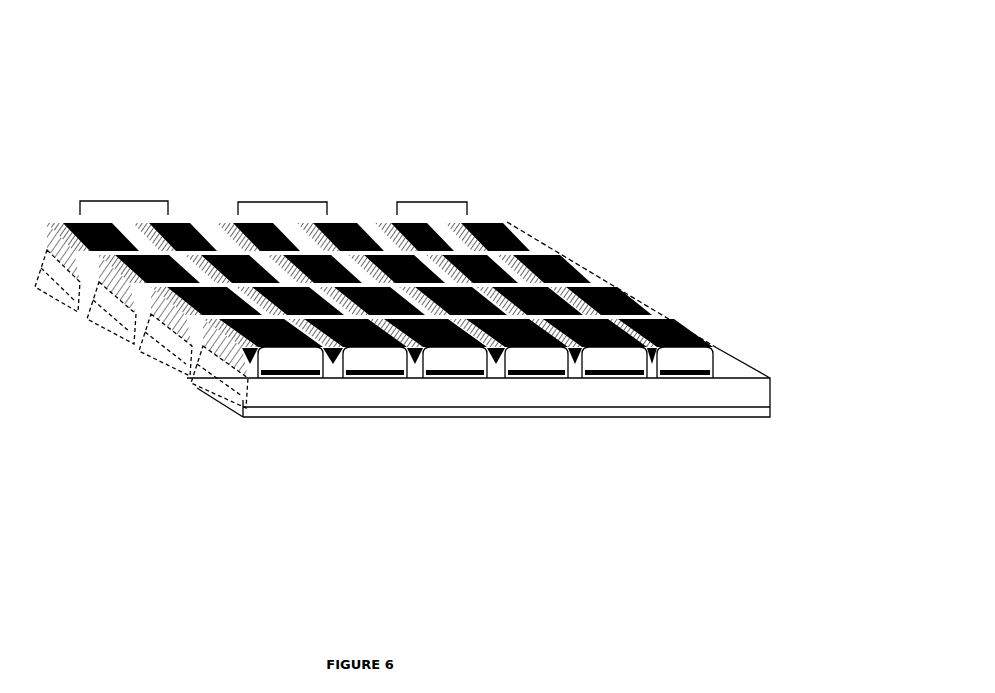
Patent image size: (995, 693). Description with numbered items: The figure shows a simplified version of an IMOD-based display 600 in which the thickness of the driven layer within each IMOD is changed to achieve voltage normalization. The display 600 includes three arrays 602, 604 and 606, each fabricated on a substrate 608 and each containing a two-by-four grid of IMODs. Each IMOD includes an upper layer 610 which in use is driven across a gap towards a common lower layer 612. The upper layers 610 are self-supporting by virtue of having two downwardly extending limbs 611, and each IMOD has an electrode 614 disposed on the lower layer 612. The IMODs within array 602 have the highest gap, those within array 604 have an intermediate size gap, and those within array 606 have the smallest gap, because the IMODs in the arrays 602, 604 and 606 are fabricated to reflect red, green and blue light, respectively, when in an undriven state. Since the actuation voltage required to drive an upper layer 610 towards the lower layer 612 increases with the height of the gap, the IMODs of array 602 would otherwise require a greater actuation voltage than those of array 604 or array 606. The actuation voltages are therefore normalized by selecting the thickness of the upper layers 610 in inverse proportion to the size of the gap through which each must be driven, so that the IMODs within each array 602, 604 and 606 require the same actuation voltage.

The display 600 is at (660, 185).
The array 602 is at (118, 201).
The array 604 is at (275, 202).
The array 606 is at (415, 202).
The substrate 608 is at (757, 398).
The upper layer 610 is at (677, 348).
The downwardly extending limbs 611 is at (642, 362).
The lower layer 612 is at (693, 380).
The electrode 614 is at (598, 363).